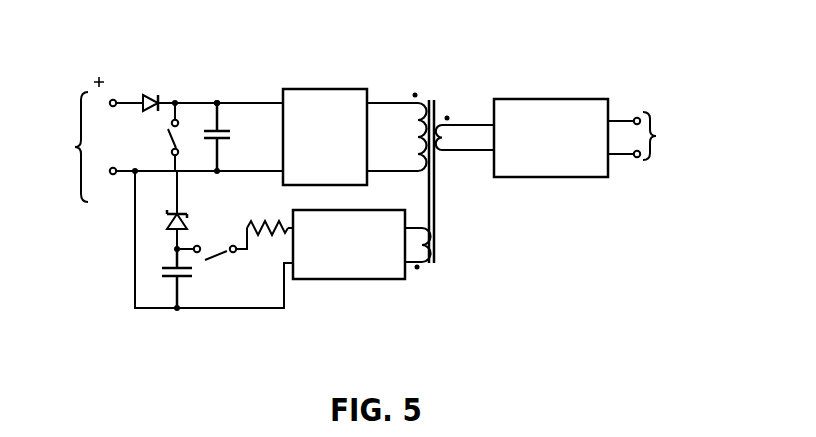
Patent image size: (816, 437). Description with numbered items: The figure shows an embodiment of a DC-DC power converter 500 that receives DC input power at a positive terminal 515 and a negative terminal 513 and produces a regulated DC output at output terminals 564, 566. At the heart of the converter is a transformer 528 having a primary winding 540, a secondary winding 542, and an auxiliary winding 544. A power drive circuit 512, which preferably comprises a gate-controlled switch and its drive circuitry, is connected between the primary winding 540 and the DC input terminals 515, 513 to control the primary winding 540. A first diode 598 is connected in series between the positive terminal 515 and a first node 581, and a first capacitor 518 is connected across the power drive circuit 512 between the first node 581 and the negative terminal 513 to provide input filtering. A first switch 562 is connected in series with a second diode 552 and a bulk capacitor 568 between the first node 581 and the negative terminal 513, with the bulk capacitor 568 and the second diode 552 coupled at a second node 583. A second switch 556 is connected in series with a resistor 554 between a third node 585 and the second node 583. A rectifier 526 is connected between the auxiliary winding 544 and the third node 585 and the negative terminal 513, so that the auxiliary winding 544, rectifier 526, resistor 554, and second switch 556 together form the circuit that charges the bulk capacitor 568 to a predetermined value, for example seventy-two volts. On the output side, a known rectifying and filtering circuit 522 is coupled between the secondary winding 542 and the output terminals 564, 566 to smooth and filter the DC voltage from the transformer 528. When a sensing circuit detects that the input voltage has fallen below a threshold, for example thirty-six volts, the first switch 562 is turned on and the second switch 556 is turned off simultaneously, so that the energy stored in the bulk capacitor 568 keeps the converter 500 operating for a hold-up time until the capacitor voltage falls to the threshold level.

The power converter 500 is at (183, 40).
The positive terminal 515 is at (113, 107).
The negative terminal 513 is at (113, 175).
The first diode 598 is at (159, 95).
The first switch 562 is at (168, 133).
The first node 581 is at (217, 100).
The first capacitor 518 is at (227, 140).
The power drive circuit 512 is at (333, 89).
The transformer 528 is at (438, 95).
The primary winding 540 is at (417, 122).
The secondary winding 542 is at (443, 152).
The rectifying and filtering circuit 522 is at (535, 99).
The DC output terminal 564 is at (636, 118).
The DC output terminal 566 is at (637, 157).
The second diode 552 is at (184, 212).
The second node 583 is at (174, 249).
The second switch 556 is at (215, 243).
The third node 585 is at (286, 226).
The resistor 554 is at (275, 233).
The bulk capacitor 568 is at (180, 278).
The rectifier 526 is at (362, 280).
The auxiliary winding 544 is at (424, 266).